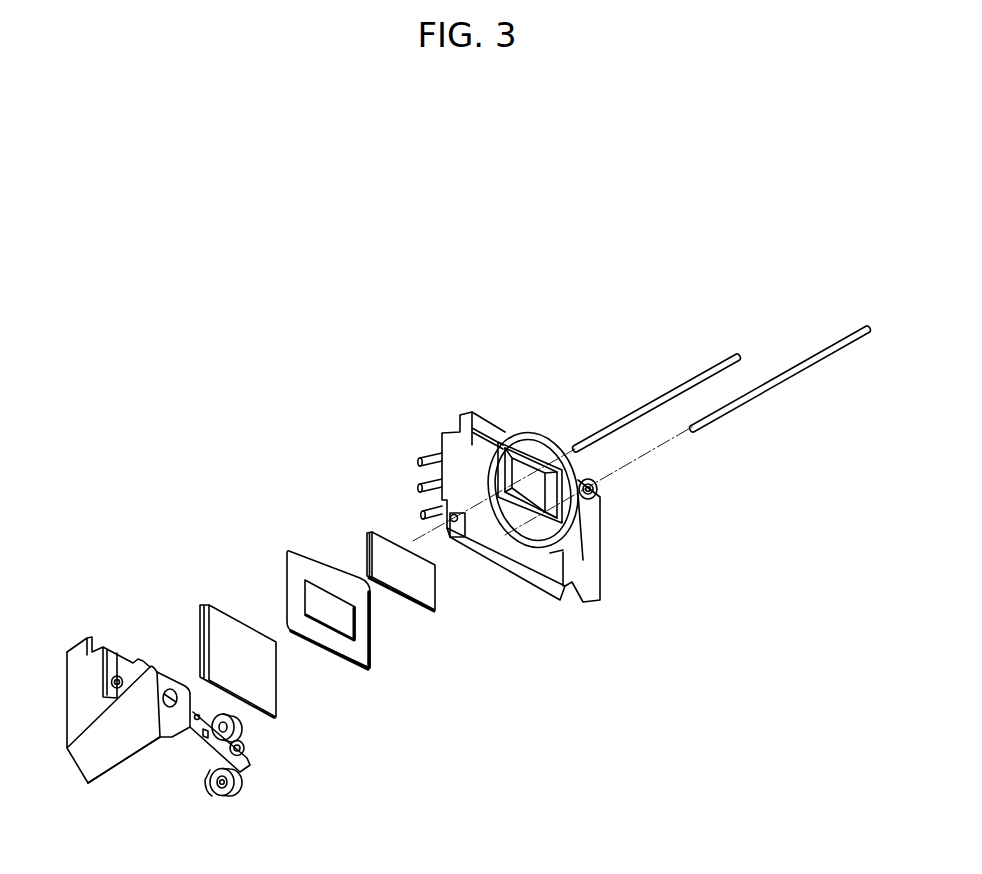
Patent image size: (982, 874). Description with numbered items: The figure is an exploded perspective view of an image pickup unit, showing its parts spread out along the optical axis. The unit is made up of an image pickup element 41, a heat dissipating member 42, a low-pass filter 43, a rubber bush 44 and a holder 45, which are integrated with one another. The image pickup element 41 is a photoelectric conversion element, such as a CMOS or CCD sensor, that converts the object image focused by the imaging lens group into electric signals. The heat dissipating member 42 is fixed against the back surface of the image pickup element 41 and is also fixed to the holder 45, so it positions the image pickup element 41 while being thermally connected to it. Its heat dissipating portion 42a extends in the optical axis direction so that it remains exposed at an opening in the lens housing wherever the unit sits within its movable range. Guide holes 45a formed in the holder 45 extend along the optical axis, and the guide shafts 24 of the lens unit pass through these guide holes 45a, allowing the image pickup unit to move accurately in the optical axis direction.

The guide shafts 24 is at (727, 410).
The image pickup element 41 is at (223, 637).
The heat dissipating member 42 is at (131, 652).
The heat dissipating portion 42a is at (130, 740).
The low-pass filter 43 is at (382, 550).
The rubber bush 44 is at (300, 558).
The holder 45 is at (497, 437).
The guide holes 45a is at (453, 545).